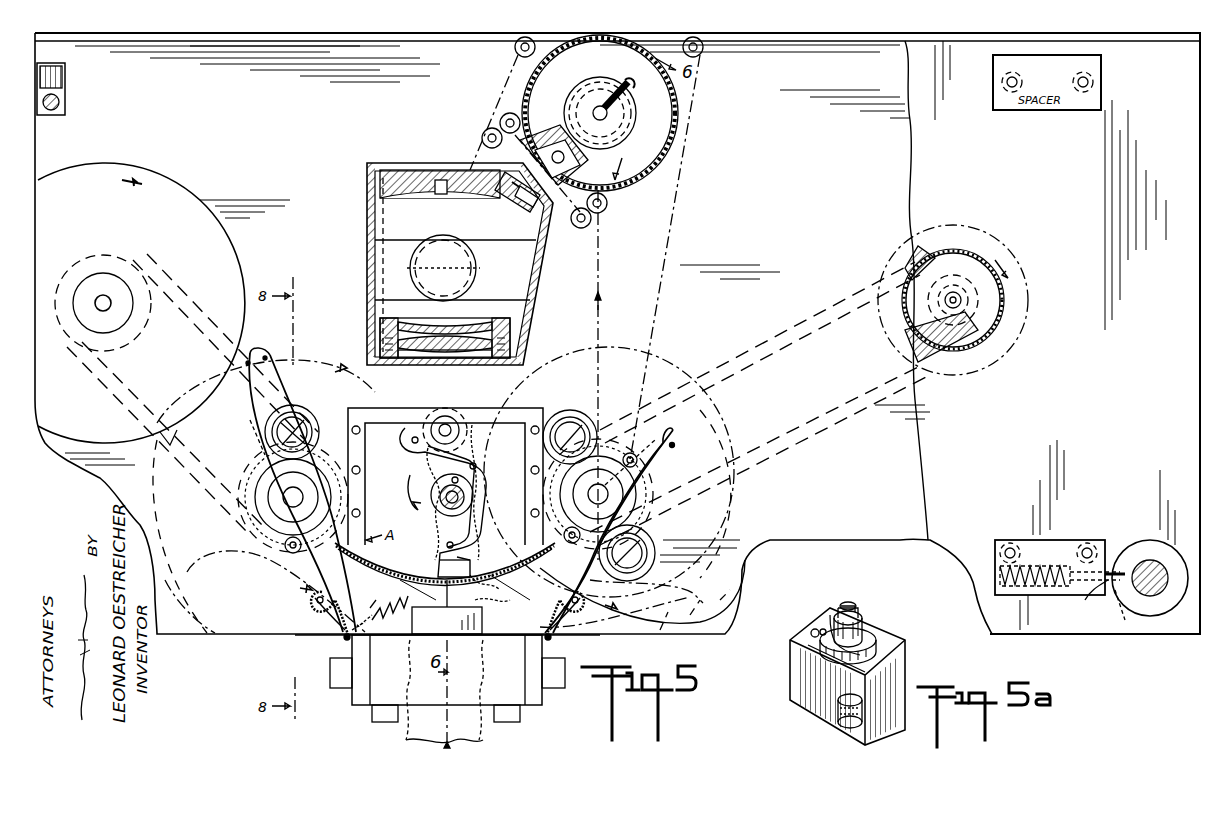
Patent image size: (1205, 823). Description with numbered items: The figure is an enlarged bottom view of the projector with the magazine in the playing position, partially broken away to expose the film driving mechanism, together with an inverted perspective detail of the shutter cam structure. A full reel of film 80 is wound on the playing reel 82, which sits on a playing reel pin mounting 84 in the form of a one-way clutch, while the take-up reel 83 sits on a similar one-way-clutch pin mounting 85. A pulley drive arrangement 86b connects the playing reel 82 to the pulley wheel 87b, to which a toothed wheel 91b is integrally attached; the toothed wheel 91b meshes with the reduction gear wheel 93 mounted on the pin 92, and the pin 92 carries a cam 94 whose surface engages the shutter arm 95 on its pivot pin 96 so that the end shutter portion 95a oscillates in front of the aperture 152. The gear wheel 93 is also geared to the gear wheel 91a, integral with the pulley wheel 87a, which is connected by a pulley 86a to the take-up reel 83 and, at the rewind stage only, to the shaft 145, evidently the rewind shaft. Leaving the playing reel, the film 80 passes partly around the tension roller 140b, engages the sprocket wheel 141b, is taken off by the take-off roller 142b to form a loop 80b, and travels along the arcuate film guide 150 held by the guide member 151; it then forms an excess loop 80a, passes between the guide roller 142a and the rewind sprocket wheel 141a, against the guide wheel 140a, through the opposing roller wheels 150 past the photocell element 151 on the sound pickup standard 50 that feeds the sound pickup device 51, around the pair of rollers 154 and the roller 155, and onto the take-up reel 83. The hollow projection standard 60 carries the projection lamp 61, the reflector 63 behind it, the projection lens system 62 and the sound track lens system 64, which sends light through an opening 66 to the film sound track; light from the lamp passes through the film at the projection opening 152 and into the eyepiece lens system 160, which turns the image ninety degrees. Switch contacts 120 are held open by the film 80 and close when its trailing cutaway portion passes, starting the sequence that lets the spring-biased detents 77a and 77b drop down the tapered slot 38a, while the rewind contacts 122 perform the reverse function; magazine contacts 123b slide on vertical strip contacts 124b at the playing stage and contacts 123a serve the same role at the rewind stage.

In FIG. 5, the spring-biased detent 77b is at (60, 75).
In FIG. 5, the playing reel 82 is at (135, 267).
In FIG. 5, the playing reel pin mounting 84 is at (108, 298).
In FIG. 5, the pulley drive arrangement 86b is at (150, 416).
In FIG. 5, the film 80 is at (270, 340).
In FIG. 5, the switch contacts 120 is at (268, 352).
In FIG. 5, the tension or guide roller 140b is at (306, 406).
In FIG. 5, the pulley wheel 87b is at (268, 460).
In FIG. 5, the sprocketed wheel 141b is at (262, 473).
In FIG. 5, the take-off roller 142b is at (301, 548).
In FIG. 5, the toothed wheel 91b is at (170, 484).
In FIG. 5, the reel table 80b is at (192, 582).
In FIG. 5, the projector lens standard 60 is at (362, 221).
In FIG. 5, the projection lamp reflector 63 is at (405, 197).
In FIG. 5, the opening 66 is at (512, 196).
In FIG. 5, the sound track projection lens system 64 is at (530, 202).
In FIG. 5, the projection lamp 61 is at (443, 268).
In FIG. 5, the projector lens system 62 is at (470, 322).
In FIG. 5, the sound pickup standard 50 is at (646, 172).
In FIG. 5, the sound pickup device 51 is at (614, 140).
In FIG. 5, the pair of rollers 154 is at (520, 48).
In FIG. 5, the arcuate film guide 150 is at (510, 118).
In FIG. 5, the guide member 151 is at (520, 150).
In FIG. 5, the take-up reel 83 is at (958, 256).
In FIG. 5, the take-up reel pin mounting 85 is at (961, 300).
In FIG. 5, the pulley 86a is at (925, 368).
In FIG. 5, the guide wheel 140a is at (570, 405).
In FIG. 5, the rewind sprocket wheel 141a is at (612, 505).
In FIG. 5, the pulley wheel 87a is at (636, 480).
In FIG. 5, the roller 145 is at (612, 520).
In FIG. 5, the guide roller 142a is at (565, 540).
In FIG. 5, the roller 155 is at (636, 448).
In FIG. 5, the rewind contacts 122 is at (672, 445).
In FIG. 5, the gear wheel 91a is at (728, 505).
In FIG. 5, the excess loop 80a is at (700, 600).
In FIG. 5, the pivot pin 96 is at (450, 425).
In FIG. 5, the shutter arm 95 is at (478, 478).
In FIG. 5, the cam 94 is at (465, 490).
In FIG. 5A, the cam 94 is at (905, 650).
In FIG. 5, the pin 92 is at (462, 500).
In FIG. 5A, the pin 92 is at (852, 604).
In FIG. 5, the reduction gear wheel 93 is at (460, 508).
In FIG. 5A, the reduction gear wheel 93 is at (874, 632).
In FIG. 5, the end shutter portion 95a is at (472, 562).
In FIG. 5, the eye piece lens system 160 is at (444, 727).
In FIG. 5, the aperture 152 is at (447, 607).
In FIG. 5, the vertical strip contacts 124b is at (355, 640).
In FIG. 5, the contacts 123b is at (340, 642).
In FIG. 5, the contacts 123a is at (556, 642).
In FIG. 5, the spring-biased detent 77a is at (1060, 577).
In FIG. 5, the tapering vertical slot 38a is at (1122, 618).